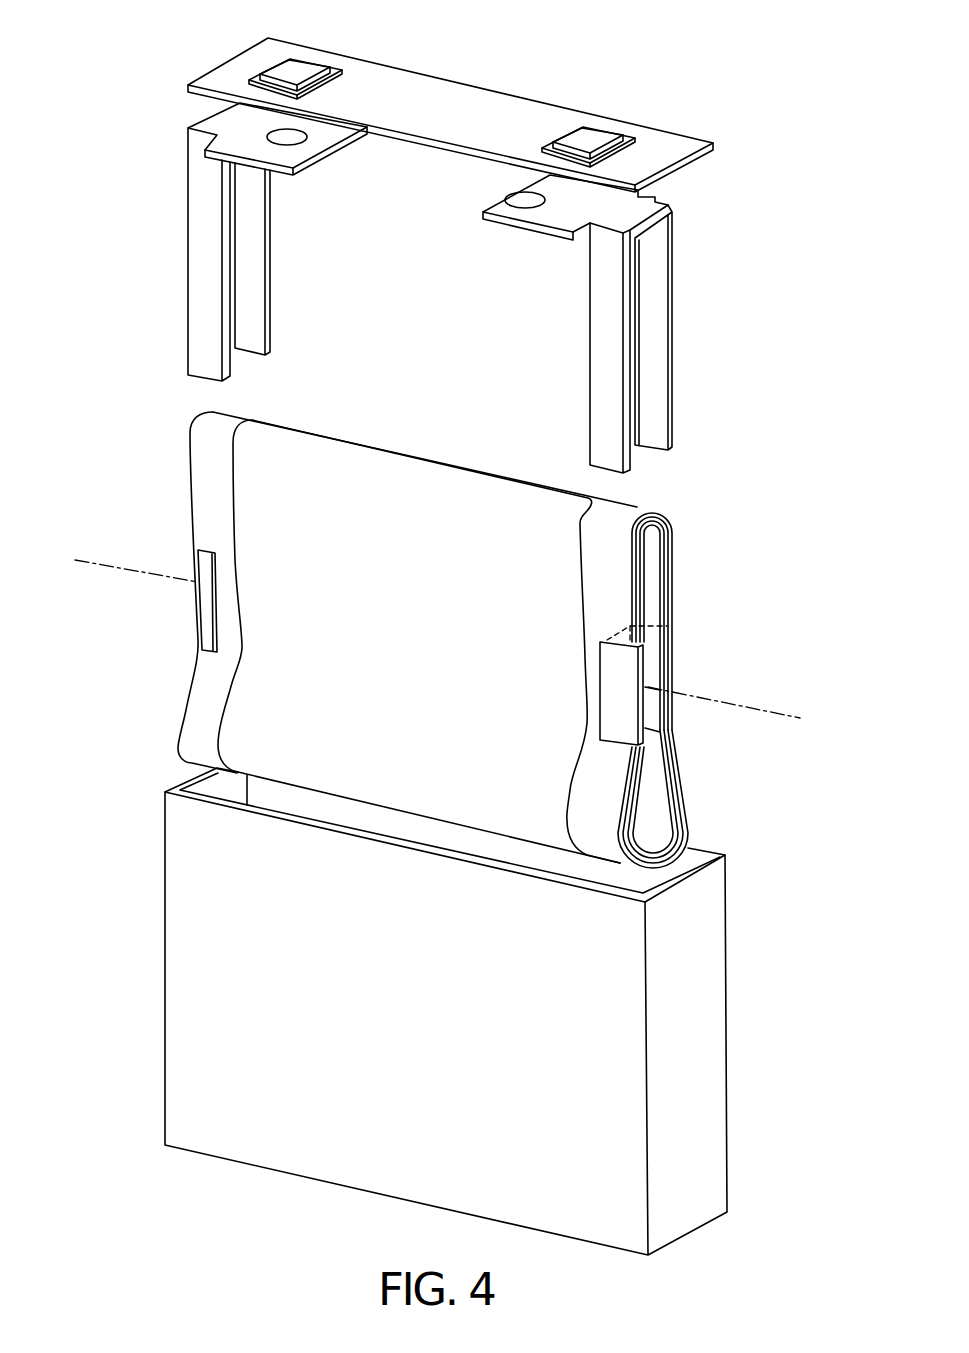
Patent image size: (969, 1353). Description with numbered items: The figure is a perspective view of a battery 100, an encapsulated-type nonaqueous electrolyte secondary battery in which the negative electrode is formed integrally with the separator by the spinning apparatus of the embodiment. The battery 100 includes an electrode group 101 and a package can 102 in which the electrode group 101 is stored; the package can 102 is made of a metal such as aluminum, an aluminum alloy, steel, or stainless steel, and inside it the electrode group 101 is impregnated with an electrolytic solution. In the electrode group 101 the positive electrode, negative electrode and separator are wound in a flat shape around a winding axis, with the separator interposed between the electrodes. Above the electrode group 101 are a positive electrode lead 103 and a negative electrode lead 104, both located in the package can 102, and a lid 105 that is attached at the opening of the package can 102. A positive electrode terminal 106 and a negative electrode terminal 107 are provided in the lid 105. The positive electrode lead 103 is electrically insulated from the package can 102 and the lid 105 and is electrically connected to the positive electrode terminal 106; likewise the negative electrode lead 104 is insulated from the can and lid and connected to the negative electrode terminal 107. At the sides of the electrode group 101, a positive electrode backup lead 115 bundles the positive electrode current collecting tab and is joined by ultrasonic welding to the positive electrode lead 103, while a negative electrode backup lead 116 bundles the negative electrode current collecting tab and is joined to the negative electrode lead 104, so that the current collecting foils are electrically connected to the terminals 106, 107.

The battery 100 is at (476, 627).
The electrode group 101 is at (435, 640).
The package can 102 is at (717, 1068).
The positive electrode lead 103 is at (173, 183).
The negative electrode lead 104 is at (680, 267).
The lid 105 is at (488, 107).
The positive electrode terminal 106 is at (298, 70).
The negative electrode terminal 107 is at (590, 138).
The positive electrode backup lead 115 is at (200, 602).
The negative electrode backup lead 116 is at (650, 672).